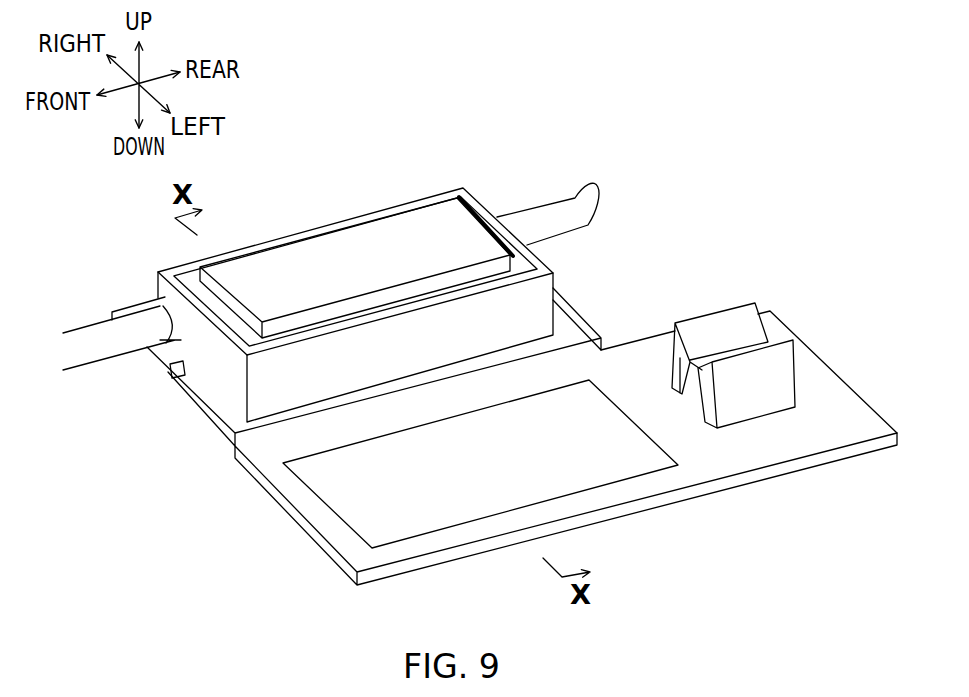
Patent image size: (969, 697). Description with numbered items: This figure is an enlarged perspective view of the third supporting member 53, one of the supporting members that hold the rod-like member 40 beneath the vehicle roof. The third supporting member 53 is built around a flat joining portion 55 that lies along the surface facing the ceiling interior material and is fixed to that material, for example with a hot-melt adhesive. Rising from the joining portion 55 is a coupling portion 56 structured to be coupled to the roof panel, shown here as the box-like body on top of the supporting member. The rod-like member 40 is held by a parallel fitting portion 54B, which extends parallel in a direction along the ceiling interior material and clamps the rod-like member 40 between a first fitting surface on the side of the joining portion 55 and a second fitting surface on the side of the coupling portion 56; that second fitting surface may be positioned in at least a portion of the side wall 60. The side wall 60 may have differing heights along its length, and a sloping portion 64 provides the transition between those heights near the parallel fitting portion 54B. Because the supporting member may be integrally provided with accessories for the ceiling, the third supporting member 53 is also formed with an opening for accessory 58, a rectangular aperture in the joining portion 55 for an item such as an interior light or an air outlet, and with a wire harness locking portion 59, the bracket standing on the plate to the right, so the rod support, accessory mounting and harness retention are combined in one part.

The rod-like member 40 is at (571, 217).
The third supporting member 53 is at (480, 200).
The parallel fitting portion 54B is at (172, 343).
The joining portion 55 is at (222, 462).
The coupling portion 56 is at (362, 243).
The opening for accessory 58 is at (335, 457).
The wire harness locking portion 59 is at (778, 362).
The side wall 60 is at (195, 420).
The sloping portion 64 is at (173, 368).